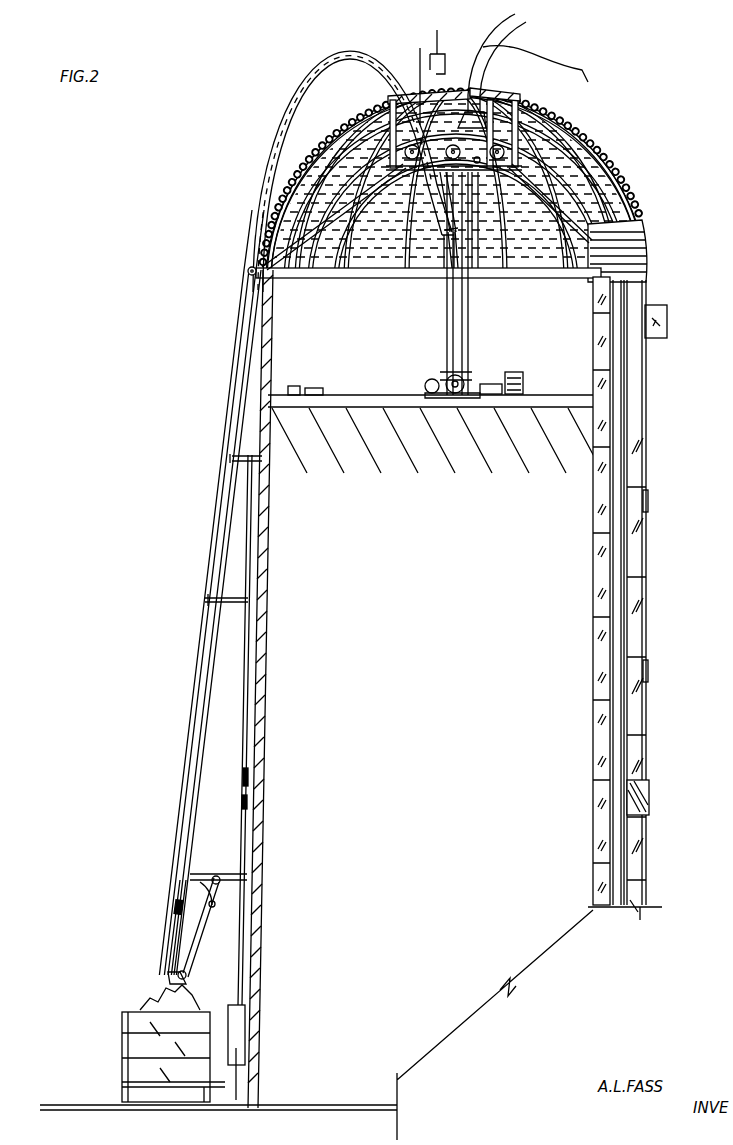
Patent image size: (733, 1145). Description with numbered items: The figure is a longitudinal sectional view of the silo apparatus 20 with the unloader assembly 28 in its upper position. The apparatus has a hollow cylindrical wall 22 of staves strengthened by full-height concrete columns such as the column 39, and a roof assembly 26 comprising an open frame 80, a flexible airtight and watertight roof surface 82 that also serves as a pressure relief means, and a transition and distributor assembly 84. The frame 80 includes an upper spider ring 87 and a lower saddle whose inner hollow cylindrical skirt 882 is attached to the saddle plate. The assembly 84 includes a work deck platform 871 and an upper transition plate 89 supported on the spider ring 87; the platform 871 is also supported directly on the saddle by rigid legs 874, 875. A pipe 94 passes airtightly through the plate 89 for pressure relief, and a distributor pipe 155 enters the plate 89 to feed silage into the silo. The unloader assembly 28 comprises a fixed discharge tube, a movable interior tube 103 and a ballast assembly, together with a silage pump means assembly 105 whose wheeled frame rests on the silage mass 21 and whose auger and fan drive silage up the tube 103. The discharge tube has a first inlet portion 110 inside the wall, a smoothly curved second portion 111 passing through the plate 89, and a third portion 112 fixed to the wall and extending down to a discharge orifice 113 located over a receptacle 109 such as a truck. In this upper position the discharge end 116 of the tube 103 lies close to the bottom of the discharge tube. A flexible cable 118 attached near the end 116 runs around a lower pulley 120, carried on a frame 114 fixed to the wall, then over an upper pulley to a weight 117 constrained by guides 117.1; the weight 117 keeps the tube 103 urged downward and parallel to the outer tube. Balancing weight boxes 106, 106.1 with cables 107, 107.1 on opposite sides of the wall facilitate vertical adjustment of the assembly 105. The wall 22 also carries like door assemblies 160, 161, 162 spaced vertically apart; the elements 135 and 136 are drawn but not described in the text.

The silo apparatus 20 is at (168, 300).
The silage mass 21 is at (476, 527).
The hollow cylindrical wall 22 is at (256, 332).
The roof assembly 26 is at (296, 164).
The unloader assembly 28 is at (236, 270).
The column 39 is at (626, 296).
The open frame 80 is at (640, 194).
The roof surface 82 is at (580, 122).
The transition and distributor assembly 84 is at (535, 57).
The upper spider ring 87 is at (521, 97).
The upper transition plate 89 is at (514, 86).
The pipe 94 is at (434, 31).
The movable interior tube 103 is at (458, 320).
The silage pump means assembly 105 is at (531, 379).
The balancing weight box 106 is at (650, 792).
The balancing weight box 106.1 is at (244, 768).
The cable 107 is at (552, 205).
The cable 107.1 is at (324, 264).
The receptacle 109 is at (143, 1066).
The first inlet portion 110 is at (429, 77).
The second portion 111 is at (351, 63).
The third portion 112 is at (207, 594).
The discharge orifice 113 is at (170, 976).
The frame 114 is at (240, 874).
The discharge end 116 is at (180, 890).
The weight 117 is at (246, 1046).
The guide 117.1 is at (236, 458).
The flexible cable 118 is at (247, 802).
The lower pulley 120 is at (186, 979).
The pipe section 135 is at (470, 234).
The pipe section 136 is at (462, 272).
The distributor pipe 155 is at (518, 26).
The door assembly 160 is at (667, 332).
The door assembly 161 is at (650, 499).
The door assembly 162 is at (650, 681).
The work deck platform 871 is at (454, 154).
The rigid leg 874 is at (334, 235).
The rigid leg 875 is at (576, 262).
The inner hollow cylindrical skirt 882 is at (406, 282).